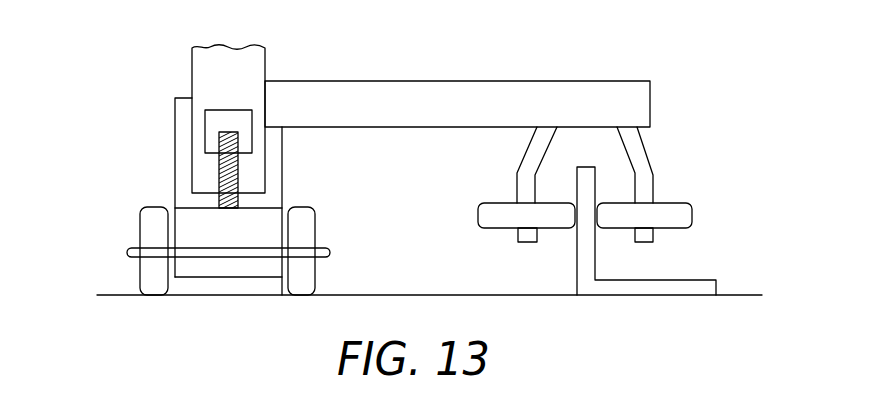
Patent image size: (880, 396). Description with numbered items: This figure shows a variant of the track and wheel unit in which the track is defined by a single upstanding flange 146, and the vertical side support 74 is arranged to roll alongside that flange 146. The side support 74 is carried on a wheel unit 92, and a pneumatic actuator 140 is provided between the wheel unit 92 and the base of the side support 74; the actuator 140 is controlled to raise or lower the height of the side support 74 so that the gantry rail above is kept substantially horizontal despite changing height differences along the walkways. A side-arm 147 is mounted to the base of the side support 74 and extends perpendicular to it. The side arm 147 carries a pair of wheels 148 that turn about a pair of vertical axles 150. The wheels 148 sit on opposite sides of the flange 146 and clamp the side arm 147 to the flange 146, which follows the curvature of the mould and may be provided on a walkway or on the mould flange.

The wheel unit 92 is at (118, 222).
The vertical side support 74 is at (267, 60).
The pneumatic actuator 140 is at (219, 178).
The side-arm 147 is at (449, 80).
The vertical axles 150 is at (650, 153).
The wheels 148 is at (694, 211).
The upstanding flange 146 is at (597, 258).